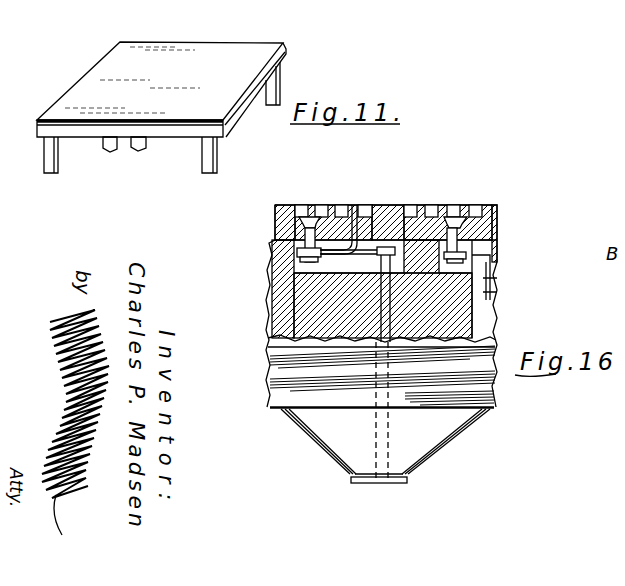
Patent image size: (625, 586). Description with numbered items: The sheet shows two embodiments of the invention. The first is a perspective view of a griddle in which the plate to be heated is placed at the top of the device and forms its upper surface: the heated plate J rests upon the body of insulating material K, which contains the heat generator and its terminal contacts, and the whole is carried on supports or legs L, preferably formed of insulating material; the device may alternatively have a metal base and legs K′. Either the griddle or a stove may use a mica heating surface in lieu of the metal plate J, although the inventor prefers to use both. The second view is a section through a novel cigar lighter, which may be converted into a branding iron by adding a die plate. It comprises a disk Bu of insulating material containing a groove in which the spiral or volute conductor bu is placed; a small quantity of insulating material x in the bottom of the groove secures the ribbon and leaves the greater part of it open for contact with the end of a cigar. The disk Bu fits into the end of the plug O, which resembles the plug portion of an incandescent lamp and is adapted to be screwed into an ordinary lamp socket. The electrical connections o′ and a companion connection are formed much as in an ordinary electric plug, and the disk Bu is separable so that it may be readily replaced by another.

In FIG. 11, the heated plate J is at (303, 38).
In FIG. 11, the body of insulating material K is at (143, 151).
In FIG. 11, the metal base and legs K′ is at (108, 152).
In FIG. 11, the supports or legs L is at (281, 86).
In FIG. 16, the insulating material x is at (335, 206).
In FIG. 16, the disk Bu is at (390, 207).
In FIG. 16, the spiral or volute conductor bu is at (420, 206).
In FIG. 16, the electrical connection o′ is at (481, 268).
In FIG. 16, the plug O is at (497, 312).